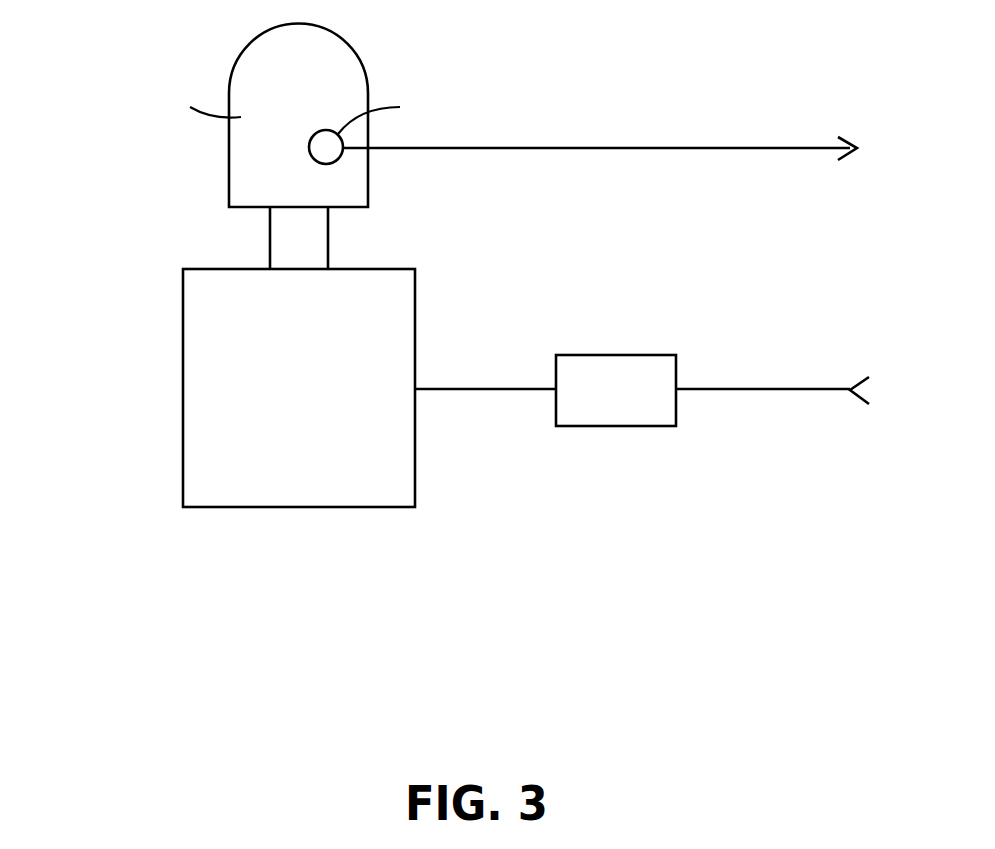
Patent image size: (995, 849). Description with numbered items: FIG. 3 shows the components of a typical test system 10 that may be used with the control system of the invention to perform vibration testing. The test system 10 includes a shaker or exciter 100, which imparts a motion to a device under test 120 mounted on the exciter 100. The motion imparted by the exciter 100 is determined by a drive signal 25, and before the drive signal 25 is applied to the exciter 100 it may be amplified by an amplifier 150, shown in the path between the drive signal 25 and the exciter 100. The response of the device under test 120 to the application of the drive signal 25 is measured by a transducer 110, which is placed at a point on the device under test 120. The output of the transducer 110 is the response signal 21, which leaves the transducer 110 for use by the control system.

The test system 10 is at (273, 660).
The response signal 21 is at (646, 114).
The drive signal 25 is at (809, 355).
The exciter 100 is at (299, 357).
The transducer 110 is at (420, 148).
The device under test 120 is at (227, 116).
The amplifier 150 is at (548, 415).